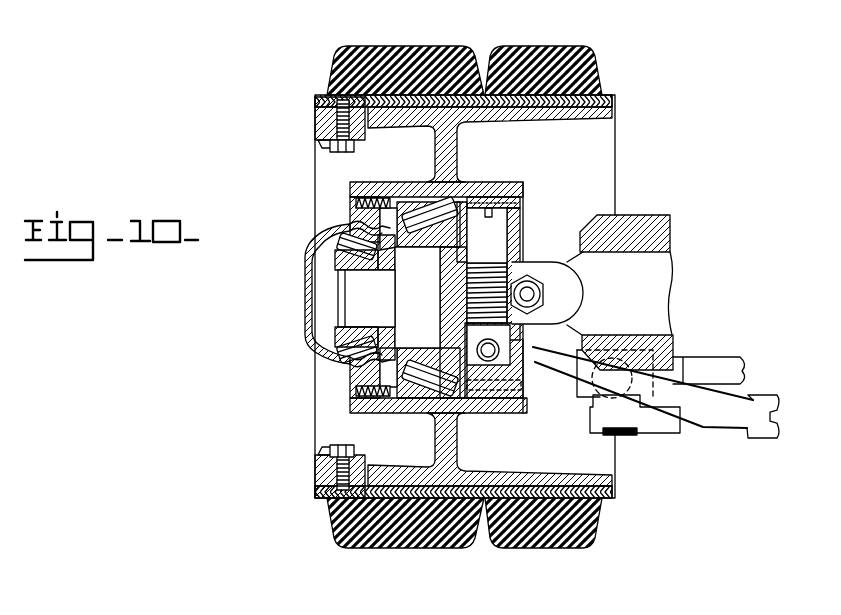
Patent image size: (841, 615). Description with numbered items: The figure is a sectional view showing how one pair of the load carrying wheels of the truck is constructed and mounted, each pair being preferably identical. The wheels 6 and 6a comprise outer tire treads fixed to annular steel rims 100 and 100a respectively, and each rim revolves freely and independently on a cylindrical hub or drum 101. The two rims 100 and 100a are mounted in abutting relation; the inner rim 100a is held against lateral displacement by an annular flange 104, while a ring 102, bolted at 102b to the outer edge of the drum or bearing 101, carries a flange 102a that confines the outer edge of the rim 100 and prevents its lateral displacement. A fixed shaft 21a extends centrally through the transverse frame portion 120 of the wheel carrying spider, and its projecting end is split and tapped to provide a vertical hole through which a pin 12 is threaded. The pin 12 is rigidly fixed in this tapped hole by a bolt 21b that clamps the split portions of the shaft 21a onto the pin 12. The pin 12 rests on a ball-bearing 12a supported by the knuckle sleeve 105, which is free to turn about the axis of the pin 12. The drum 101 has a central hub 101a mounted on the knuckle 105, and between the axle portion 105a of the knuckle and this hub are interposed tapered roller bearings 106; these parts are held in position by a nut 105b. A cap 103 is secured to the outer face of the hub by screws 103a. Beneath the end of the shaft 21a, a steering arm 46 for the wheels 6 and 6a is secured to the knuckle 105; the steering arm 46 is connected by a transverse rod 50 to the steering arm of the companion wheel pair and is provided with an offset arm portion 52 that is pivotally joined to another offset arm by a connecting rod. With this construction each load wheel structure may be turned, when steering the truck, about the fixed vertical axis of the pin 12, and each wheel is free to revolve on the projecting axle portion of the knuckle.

The load carrying wheel 6 is at (398, 48).
The load carrying wheel 6a is at (548, 38).
The annular steel rim 100 is at (328, 92).
The annular steel rim 100a is at (605, 93).
The annular flange 104 is at (615, 99).
The cylindrical hub or drum 101 is at (540, 130).
The central hub 101a is at (498, 183).
The ring 102 is at (316, 148).
The flange 102a is at (315, 107).
The bolt 102b is at (341, 153).
The cap 103 is at (303, 257).
The screws 103a is at (355, 205).
The knuckle sleeve 105 is at (517, 244).
The axle portion of the knuckle 105a is at (403, 301).
The nut 105b is at (327, 327).
The tapered roller bearings 106 is at (457, 183).
The pin 12 is at (532, 210).
The ball-bearing 12a is at (501, 410).
The transverse frame portion 120 is at (670, 238).
The fixed shaft 21a is at (660, 309).
The bolt 21b is at (530, 292).
The transverse rod 50 is at (722, 367).
The steering arm 46 is at (653, 418).
The offset arm portion 52 is at (718, 413).